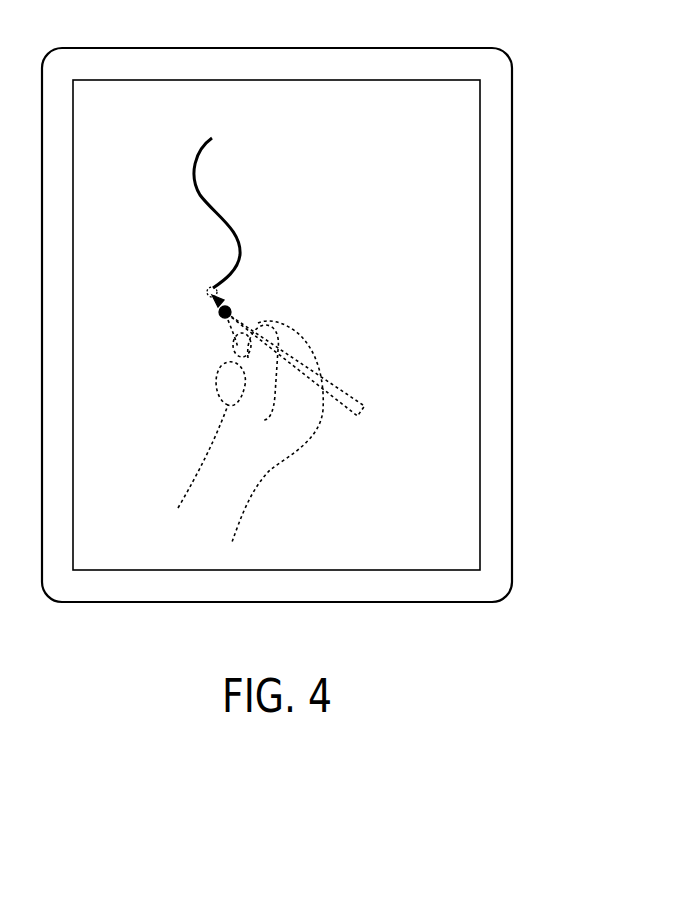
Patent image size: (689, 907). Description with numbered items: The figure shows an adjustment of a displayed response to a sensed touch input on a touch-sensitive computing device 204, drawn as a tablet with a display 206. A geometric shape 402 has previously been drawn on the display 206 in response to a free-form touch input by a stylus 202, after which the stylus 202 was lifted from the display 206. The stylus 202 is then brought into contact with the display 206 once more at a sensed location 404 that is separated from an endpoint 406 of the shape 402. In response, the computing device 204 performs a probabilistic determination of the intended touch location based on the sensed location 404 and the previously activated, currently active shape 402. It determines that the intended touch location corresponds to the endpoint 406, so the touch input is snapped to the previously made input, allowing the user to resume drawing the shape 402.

The stylus 202 is at (365, 407).
The computing device 204 is at (512, 68).
The display 206 is at (437, 142).
The geometric shape 402 is at (240, 191).
The sensed location 404 is at (232, 307).
The endpoint 406 is at (207, 287).